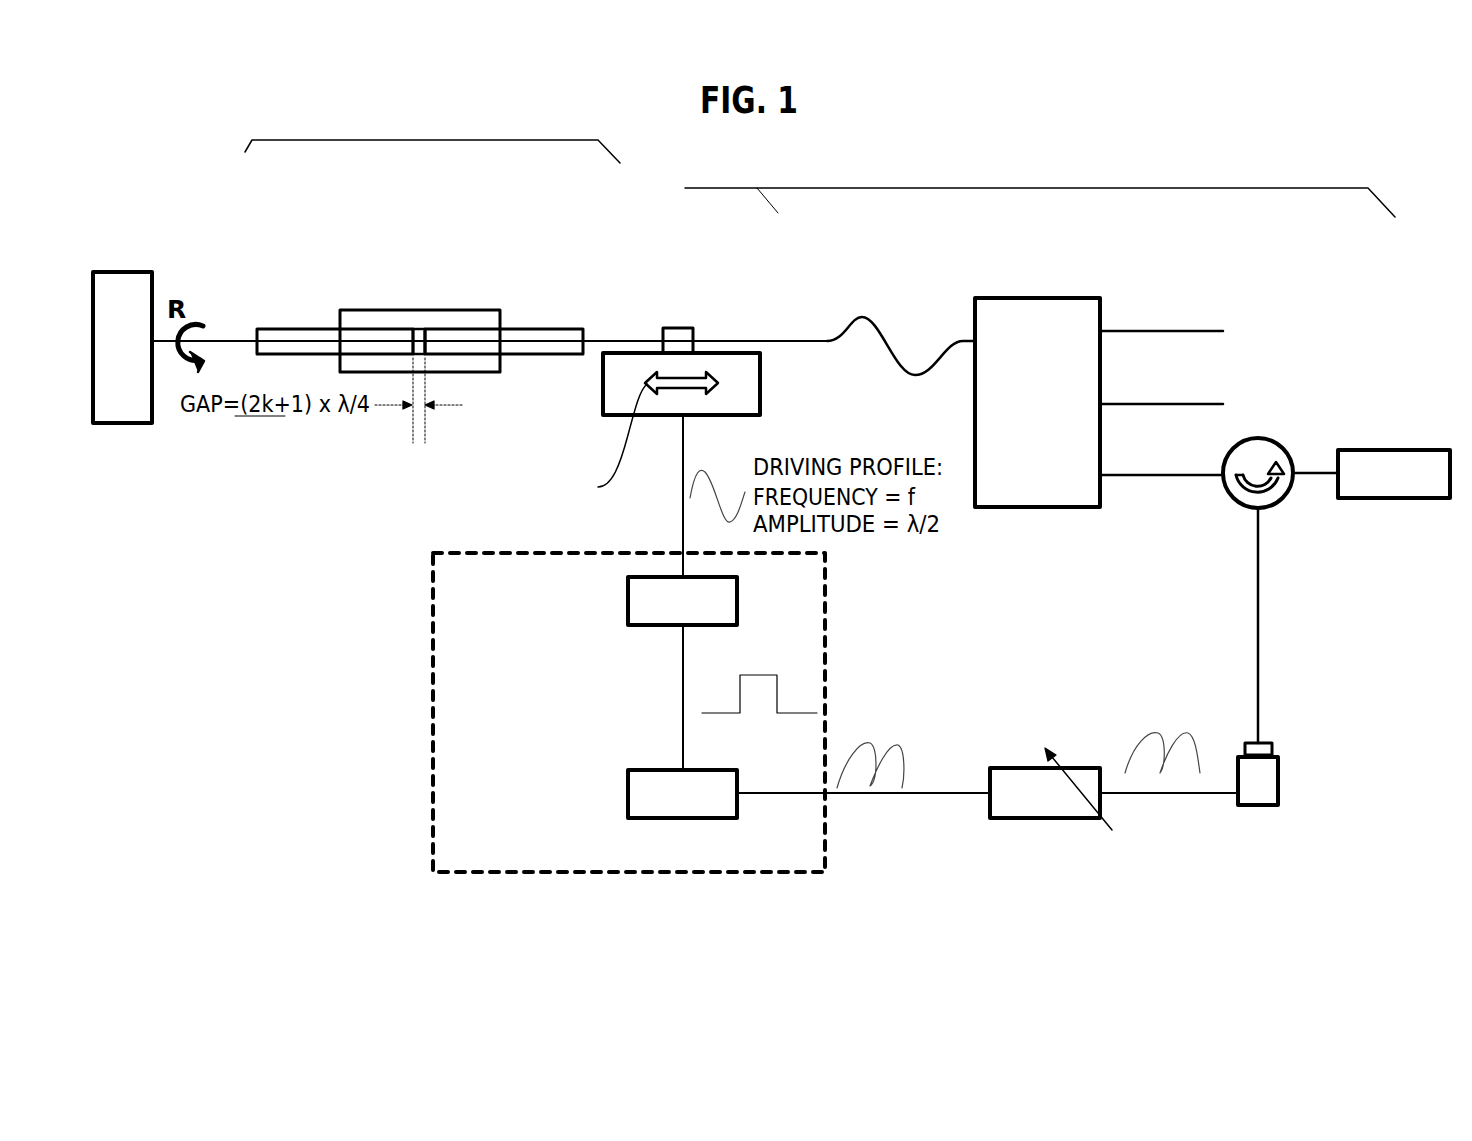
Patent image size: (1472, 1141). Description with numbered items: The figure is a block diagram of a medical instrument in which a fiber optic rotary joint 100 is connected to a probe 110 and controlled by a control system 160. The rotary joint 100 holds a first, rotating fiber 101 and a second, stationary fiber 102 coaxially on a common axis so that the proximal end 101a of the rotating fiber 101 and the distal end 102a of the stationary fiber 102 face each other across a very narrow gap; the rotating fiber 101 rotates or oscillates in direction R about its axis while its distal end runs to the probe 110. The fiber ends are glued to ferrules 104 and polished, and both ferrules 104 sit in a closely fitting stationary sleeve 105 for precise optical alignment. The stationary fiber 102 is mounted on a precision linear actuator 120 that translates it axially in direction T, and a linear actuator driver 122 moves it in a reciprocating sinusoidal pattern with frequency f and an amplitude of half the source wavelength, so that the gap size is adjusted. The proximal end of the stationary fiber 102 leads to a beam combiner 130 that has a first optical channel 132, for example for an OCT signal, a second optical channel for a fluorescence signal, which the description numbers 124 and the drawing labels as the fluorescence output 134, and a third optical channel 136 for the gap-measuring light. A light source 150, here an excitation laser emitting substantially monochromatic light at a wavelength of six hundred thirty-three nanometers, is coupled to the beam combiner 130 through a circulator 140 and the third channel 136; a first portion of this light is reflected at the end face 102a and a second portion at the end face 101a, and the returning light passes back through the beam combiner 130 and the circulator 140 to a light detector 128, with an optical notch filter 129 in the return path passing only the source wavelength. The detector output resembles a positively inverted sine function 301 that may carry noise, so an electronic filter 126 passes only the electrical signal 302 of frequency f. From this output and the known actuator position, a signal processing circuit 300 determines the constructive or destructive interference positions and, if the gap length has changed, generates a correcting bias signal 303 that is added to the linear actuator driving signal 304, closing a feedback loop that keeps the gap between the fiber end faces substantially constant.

The fiber optic rotary joint 100 is at (432, 131).
The first fiber 101 is at (240, 340).
The proximal end of the rotating fiber 101a is at (413, 350).
The second fiber 102 is at (603, 340).
The distal end of the stationary fiber 102a is at (427, 344).
The ferrules 104 is at (509, 322).
The stationary sleeve 105 is at (375, 310).
The probe 110 is at (122, 347).
The linear actuator 120 is at (722, 404).
The linear actuator driver 122 is at (619, 605).
The second optical channel 124 is at (610, 791).
The electronic filter 126 is at (1052, 832).
The light detector 128 is at (1310, 842).
The optical filter 129 is at (1272, 747).
The beam combiner 130 is at (1037, 402).
The first optical channel 132 is at (1161, 296).
The fluorescence output 134 is at (1192, 373).
The third optical channel 136 is at (1173, 452).
The circulator 140 is at (1229, 590).
The light source 150 is at (1388, 431).
The control system 160 is at (1040, 184).
The signal processing circuit 300 is at (831, 636).
The positively inverted sine function 301 is at (1162, 736).
The electrical signal of frequency f 302 is at (870, 748).
The correcting bias signal 303 is at (759, 678).
The linear actuator driving signal 304 is at (717, 480).